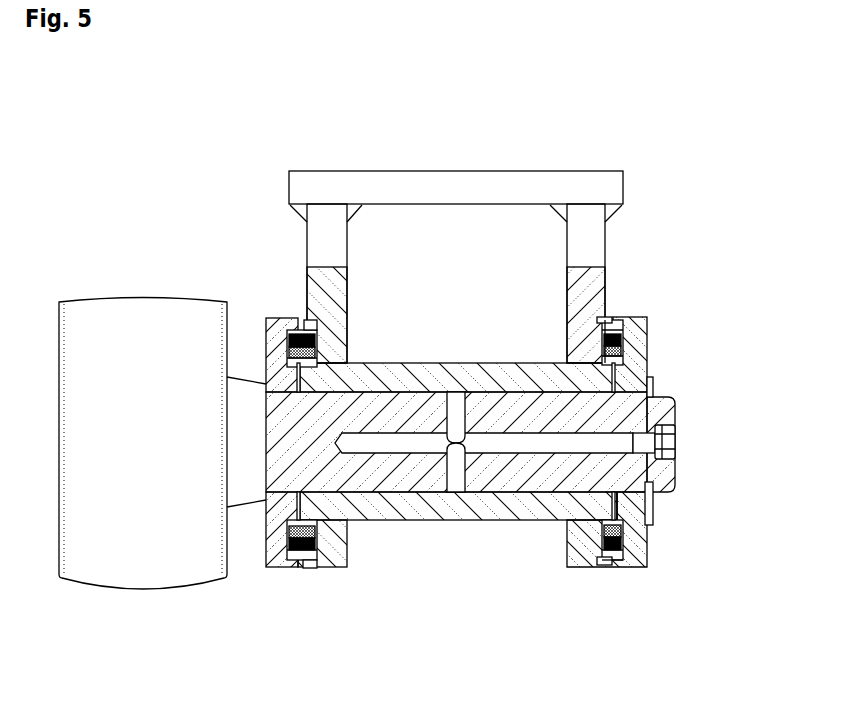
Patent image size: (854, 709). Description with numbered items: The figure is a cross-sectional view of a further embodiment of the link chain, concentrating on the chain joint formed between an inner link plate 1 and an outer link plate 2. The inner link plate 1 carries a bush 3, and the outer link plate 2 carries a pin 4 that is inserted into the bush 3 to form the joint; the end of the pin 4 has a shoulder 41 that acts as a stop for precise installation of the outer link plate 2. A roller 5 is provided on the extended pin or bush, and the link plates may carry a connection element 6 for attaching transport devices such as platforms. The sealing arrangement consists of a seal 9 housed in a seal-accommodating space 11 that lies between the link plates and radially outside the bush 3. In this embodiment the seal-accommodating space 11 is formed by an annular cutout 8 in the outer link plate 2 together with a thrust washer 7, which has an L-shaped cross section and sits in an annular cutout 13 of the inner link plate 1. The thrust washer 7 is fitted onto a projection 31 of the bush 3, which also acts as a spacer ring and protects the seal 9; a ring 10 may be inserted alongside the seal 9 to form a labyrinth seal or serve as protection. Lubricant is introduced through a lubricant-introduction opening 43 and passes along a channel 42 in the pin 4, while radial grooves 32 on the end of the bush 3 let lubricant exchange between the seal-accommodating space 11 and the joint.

The inner link plate 1 is at (605, 240).
The outer link plate 2 is at (647, 333).
The bush 3 is at (498, 520).
The pin 4 is at (675, 479).
The roller 5 is at (63, 302).
The connection element 6 is at (557, 171).
The thrust washer 7 is at (608, 320).
The cutout/annular groove 8 is at (624, 347).
The seal 9 is at (625, 363).
The ring 10 is at (608, 552).
The seal-accommodating space 11 is at (612, 362).
The cutout 13 is at (595, 343).
The projection 31 is at (603, 503).
The groove 32 is at (617, 512).
The shoulder 41 is at (653, 500).
The channel 42 is at (393, 452).
The lubricant-introduction opening 43 is at (668, 437).